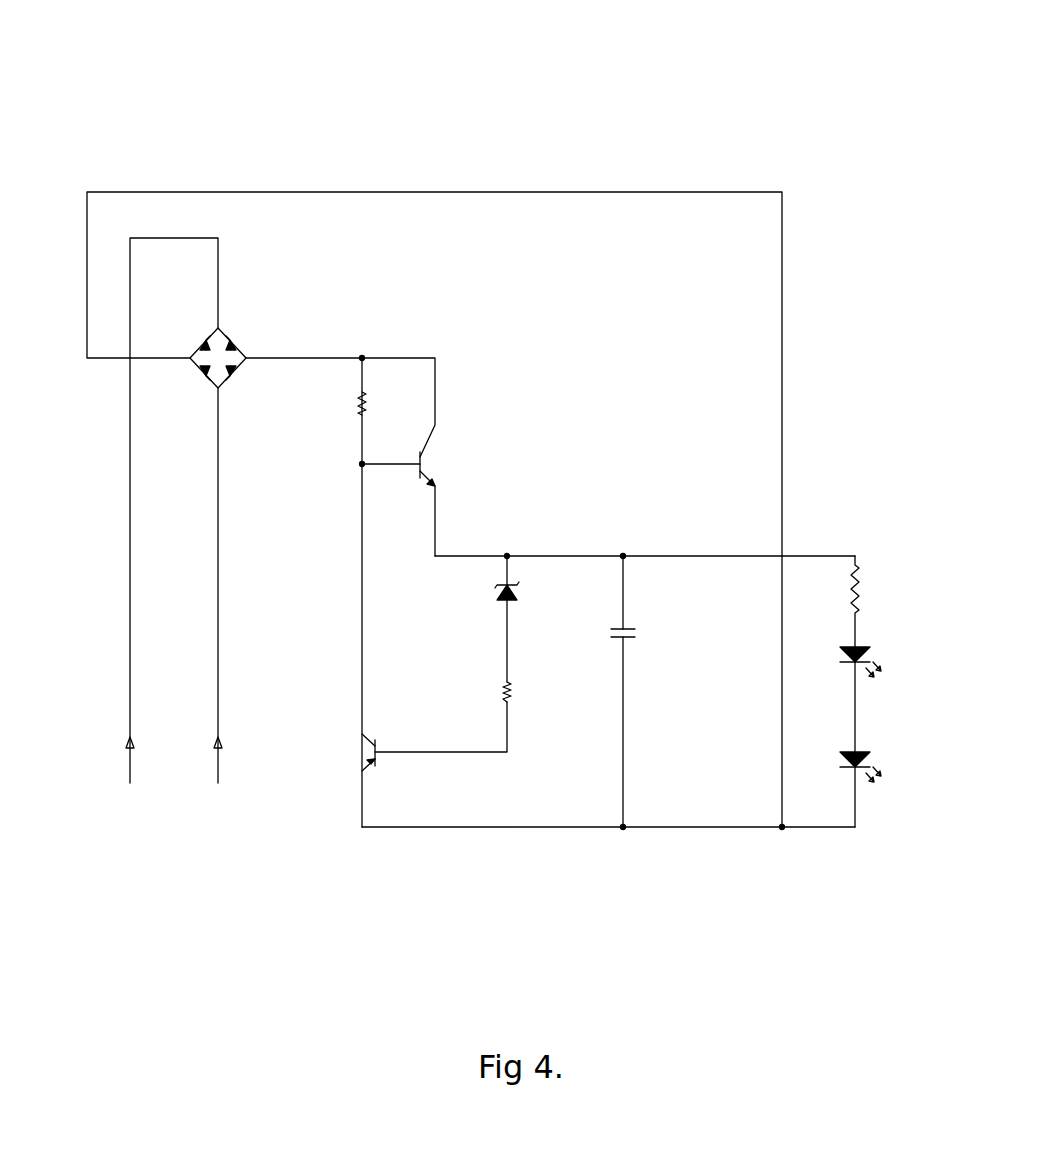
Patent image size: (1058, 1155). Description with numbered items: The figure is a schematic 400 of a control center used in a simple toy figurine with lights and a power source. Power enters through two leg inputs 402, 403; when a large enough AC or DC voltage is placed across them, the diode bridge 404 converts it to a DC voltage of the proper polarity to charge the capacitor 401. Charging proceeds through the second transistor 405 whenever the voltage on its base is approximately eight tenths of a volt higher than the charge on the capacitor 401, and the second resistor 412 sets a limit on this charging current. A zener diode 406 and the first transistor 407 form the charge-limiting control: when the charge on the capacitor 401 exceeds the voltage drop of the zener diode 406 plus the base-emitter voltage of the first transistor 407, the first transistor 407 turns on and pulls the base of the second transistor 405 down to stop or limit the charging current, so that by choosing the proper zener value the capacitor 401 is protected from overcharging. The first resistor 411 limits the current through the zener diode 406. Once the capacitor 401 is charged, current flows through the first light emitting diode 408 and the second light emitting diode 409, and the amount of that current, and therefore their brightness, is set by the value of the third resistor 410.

The schematic 400 is at (750, 127).
The capacitor C1 401 is at (642, 613).
The leg input 402 is at (137, 817).
The leg input 403 is at (243, 794).
The diode bridge DB1 404 is at (288, 323).
The transistor Q2 405 is at (480, 448).
The zener diode D3 406 is at (550, 573).
The transistor Q1 407 is at (315, 742).
The light emitting diode D1 408 is at (892, 767).
The light emitting diode D2 409 is at (878, 653).
The resistor R3 410 is at (863, 565).
The resistor R1 411 is at (513, 705).
The resistor R2 412 is at (368, 395).